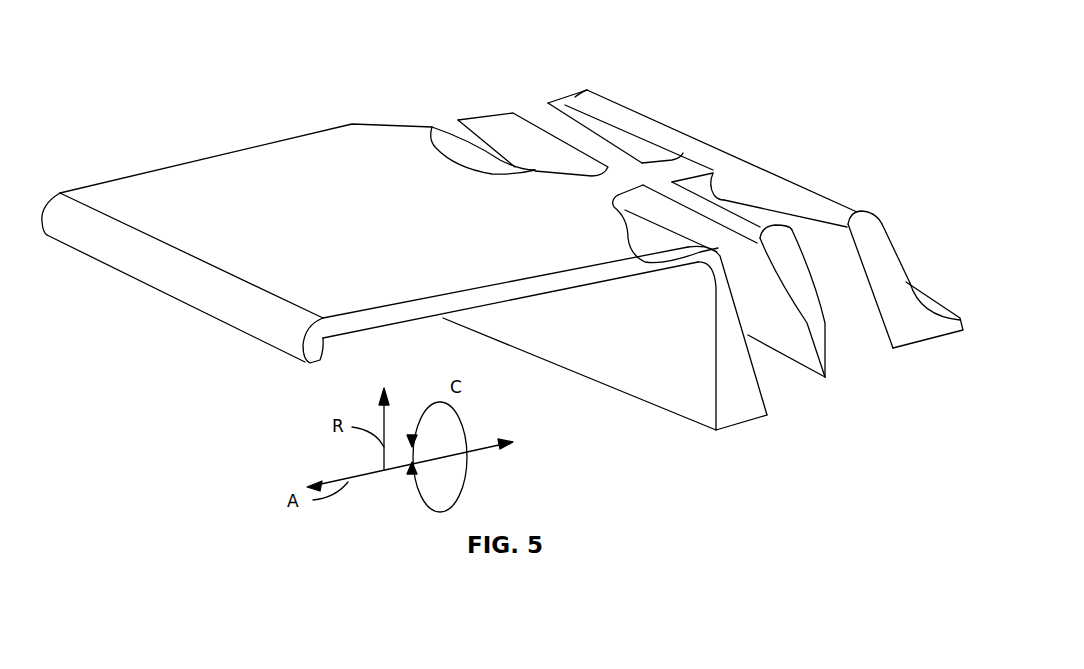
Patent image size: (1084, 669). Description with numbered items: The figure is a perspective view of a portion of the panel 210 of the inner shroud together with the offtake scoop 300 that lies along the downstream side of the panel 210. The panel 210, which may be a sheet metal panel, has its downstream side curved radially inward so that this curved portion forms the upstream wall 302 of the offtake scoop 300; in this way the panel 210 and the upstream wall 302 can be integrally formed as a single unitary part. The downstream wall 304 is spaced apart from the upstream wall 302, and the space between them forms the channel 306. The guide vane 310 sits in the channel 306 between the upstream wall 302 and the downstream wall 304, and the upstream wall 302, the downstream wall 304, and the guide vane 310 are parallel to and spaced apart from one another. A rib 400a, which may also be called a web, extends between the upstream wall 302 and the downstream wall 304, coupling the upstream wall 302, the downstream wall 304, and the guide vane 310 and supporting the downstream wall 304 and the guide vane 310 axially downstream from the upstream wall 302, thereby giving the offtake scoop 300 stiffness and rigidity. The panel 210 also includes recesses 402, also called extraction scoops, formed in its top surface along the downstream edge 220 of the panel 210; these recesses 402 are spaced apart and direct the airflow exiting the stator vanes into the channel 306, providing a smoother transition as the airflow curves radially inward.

The panel 210 is at (295, 185).
The downstream edge 220 is at (617, 196).
The offtake scoop 300 is at (687, 80).
The upstream wall 302 is at (756, 418).
The downstream wall 304 is at (887, 282).
The channel 306 is at (742, 195).
The guide vane 310 is at (813, 323).
The rib 400a is at (597, 182).
The recesses 402 is at (448, 147).